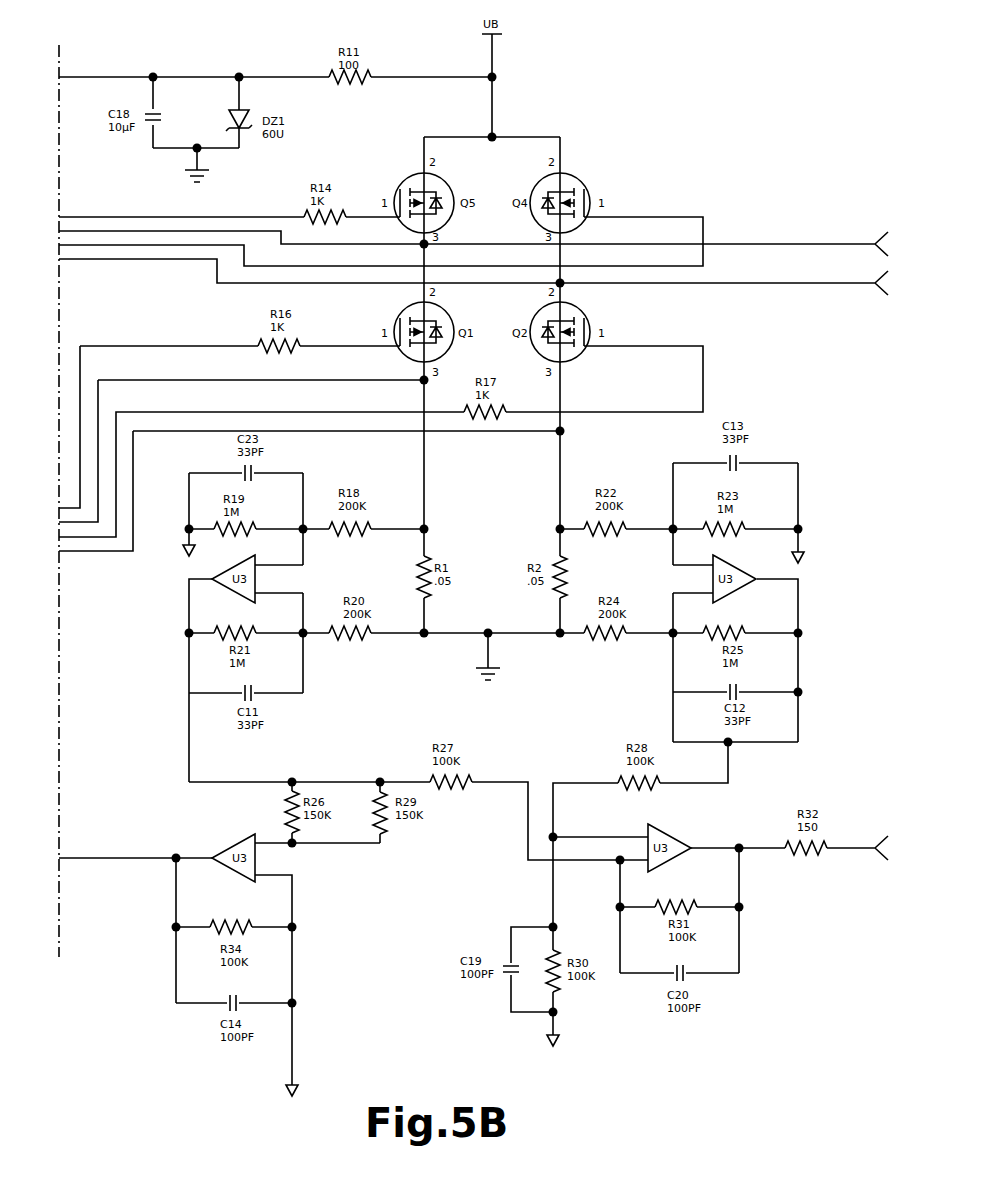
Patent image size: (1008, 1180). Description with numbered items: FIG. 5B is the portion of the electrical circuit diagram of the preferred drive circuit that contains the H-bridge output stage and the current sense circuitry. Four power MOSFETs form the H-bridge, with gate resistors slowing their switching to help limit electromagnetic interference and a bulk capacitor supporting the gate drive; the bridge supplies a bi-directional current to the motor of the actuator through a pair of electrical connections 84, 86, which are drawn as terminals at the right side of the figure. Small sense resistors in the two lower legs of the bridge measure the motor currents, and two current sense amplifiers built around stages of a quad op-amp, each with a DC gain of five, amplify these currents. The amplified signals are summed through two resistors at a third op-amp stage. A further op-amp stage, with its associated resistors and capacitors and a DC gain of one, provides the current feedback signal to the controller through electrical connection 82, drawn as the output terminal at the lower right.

The electrical connection 82 is at (865, 845).
The electrical connection 84 is at (851, 243).
The electrical connection 86 is at (857, 287).